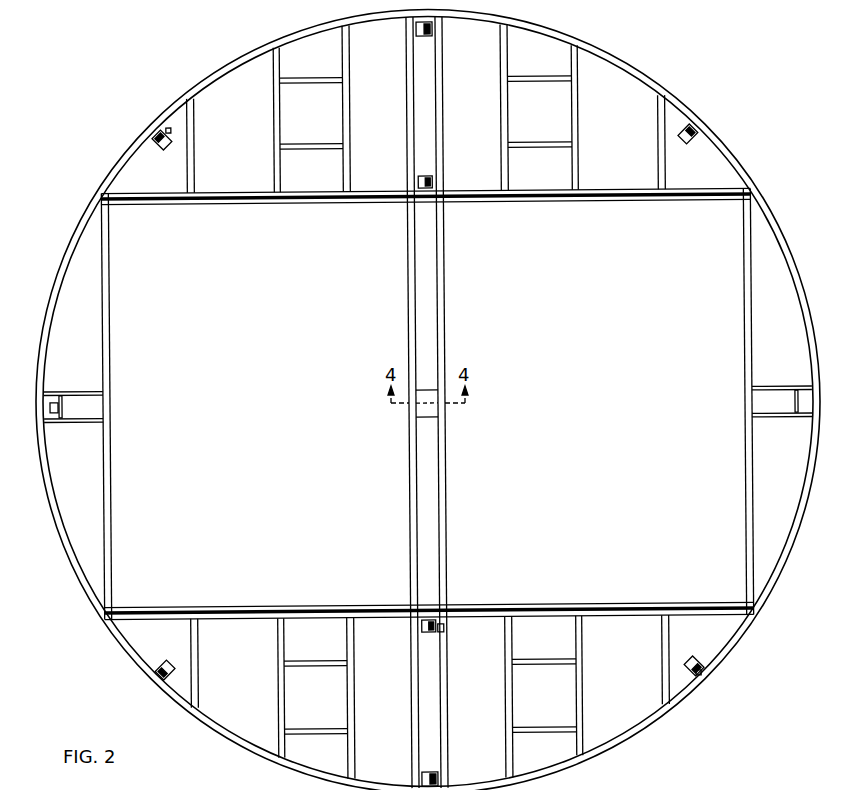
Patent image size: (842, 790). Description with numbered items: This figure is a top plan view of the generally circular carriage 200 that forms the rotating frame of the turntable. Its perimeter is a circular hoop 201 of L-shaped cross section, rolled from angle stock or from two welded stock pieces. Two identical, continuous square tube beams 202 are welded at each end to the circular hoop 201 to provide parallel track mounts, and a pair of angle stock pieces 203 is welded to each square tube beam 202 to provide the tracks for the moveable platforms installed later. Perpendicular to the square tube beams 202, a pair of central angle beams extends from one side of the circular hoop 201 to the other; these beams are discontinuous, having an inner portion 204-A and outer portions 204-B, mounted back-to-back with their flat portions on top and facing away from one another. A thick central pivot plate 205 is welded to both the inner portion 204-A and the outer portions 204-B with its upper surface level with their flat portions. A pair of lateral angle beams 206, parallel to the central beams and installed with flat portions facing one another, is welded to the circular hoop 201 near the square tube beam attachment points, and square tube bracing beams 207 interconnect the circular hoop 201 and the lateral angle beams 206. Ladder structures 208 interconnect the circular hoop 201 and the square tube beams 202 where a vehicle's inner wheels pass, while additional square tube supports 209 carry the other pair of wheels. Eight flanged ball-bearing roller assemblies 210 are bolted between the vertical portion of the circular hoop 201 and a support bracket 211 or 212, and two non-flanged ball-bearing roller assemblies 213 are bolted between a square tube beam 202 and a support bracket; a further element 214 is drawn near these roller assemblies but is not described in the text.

The carriage 200 is at (147, 74).
The circular hoop 201 is at (627, 737).
The square tube beams 202 is at (262, 192).
The angle stock pieces 203 is at (236, 205).
The inner portion of central angle beam 204-A is at (410, 318).
The outer portions of central angle beam 204-B is at (448, 697).
The central pivot plate 205 is at (428, 405).
The lateral angle beams 206 is at (108, 322).
The square tube bracing beams 207 is at (78, 417).
The ladder structures 208 is at (276, 119).
The square tube supports 209 is at (190, 175).
The flanged ball-bearing roller assemblies 210 is at (158, 140).
The support bracket 211 is at (168, 130).
The support bracket 212 is at (56, 400).
The non-flanged ball-bearing roller assemblies 213 is at (418, 183).
The fastener 214 is at (440, 631).